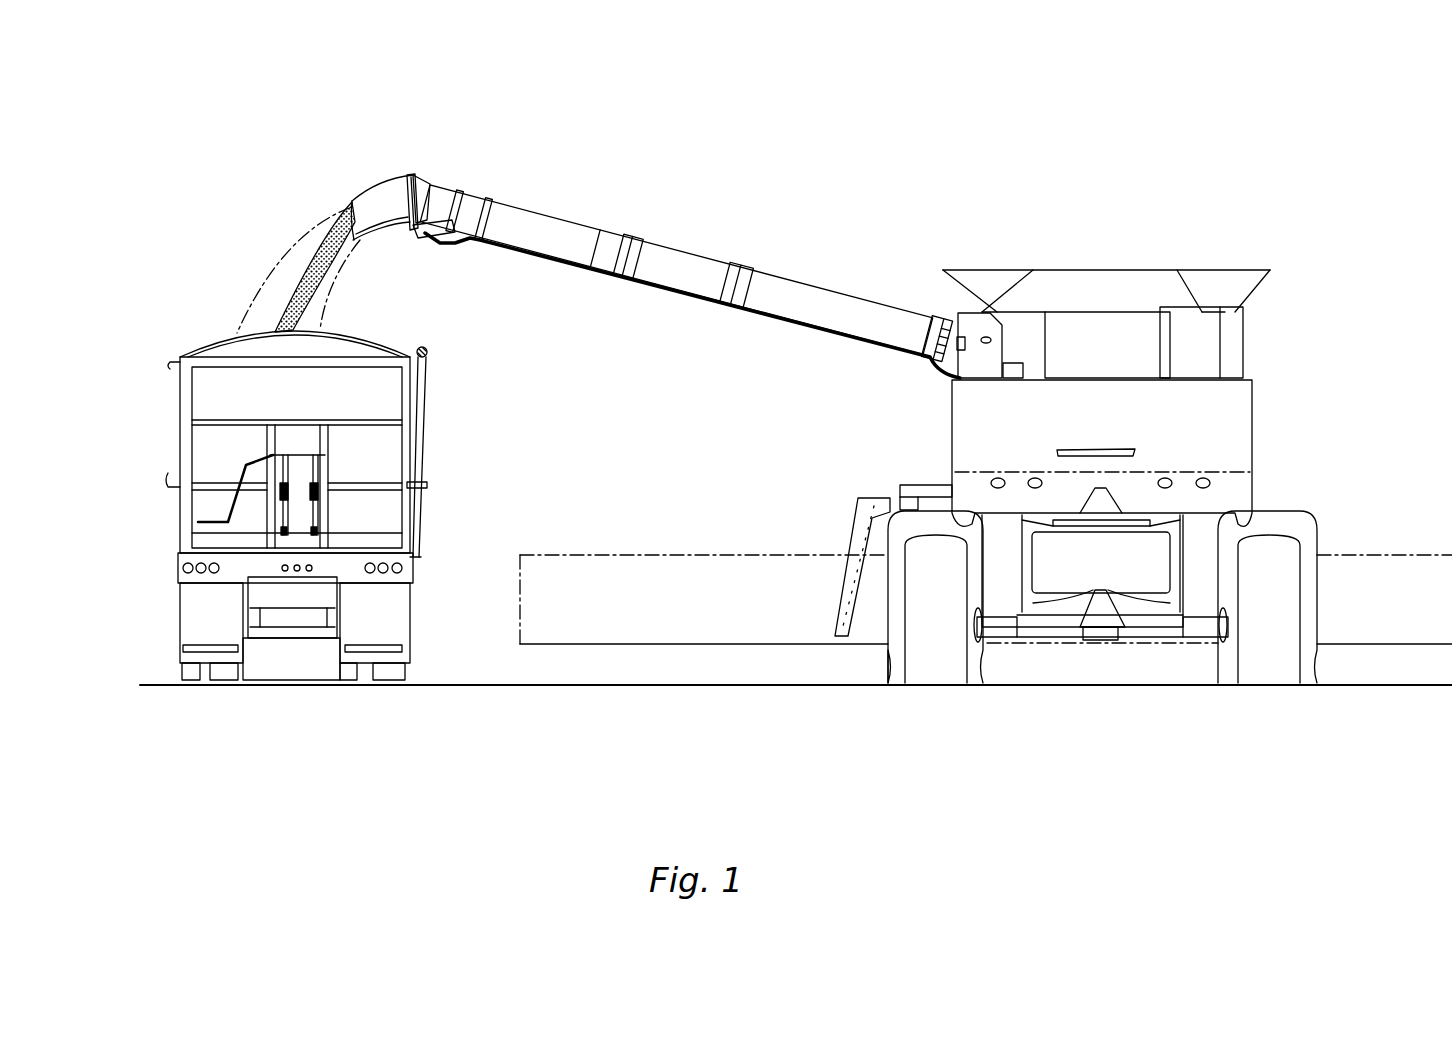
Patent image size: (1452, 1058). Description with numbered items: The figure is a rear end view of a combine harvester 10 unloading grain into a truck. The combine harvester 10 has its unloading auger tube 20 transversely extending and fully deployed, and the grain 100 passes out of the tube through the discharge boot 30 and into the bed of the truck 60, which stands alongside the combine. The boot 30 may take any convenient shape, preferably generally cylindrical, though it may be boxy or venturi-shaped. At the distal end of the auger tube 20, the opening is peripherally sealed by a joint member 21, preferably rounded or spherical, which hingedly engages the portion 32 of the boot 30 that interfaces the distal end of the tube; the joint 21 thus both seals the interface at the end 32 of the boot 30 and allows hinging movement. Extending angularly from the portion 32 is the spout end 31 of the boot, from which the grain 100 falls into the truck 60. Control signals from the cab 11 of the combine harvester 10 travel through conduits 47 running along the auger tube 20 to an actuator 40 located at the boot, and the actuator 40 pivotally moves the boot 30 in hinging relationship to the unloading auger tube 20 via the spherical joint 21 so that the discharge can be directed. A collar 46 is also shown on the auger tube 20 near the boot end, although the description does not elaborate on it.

The combine harvester 10 is at (1108, 429).
The cab 11 is at (1137, 342).
The unloading auger tube 20 is at (679, 318).
The joint member 21 is at (431, 168).
The discharge boot 30 is at (398, 180).
The spout end 31 is at (356, 196).
The portion of boot 32 is at (393, 177).
The actuator 40 is at (426, 240).
The collar 46 is at (415, 212).
The conduits 47 is at (547, 256).
The truck 60 is at (420, 437).
The grain 100 is at (287, 280).